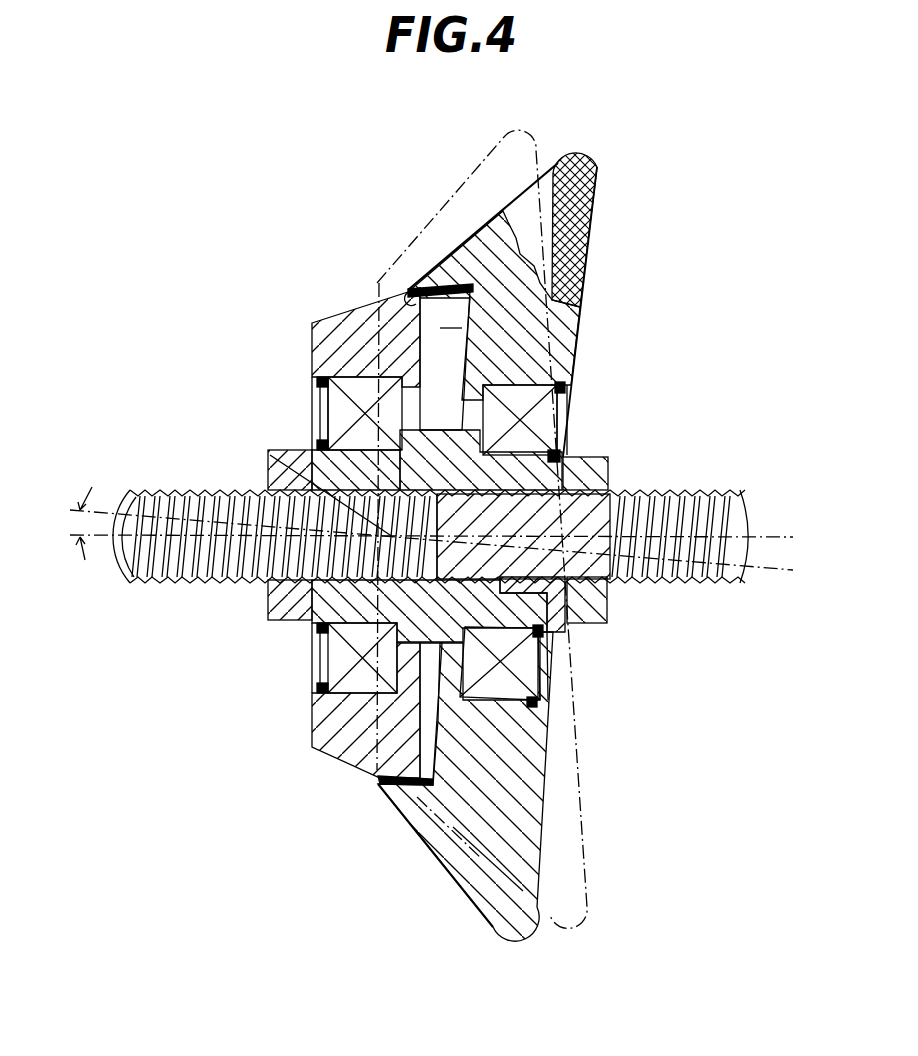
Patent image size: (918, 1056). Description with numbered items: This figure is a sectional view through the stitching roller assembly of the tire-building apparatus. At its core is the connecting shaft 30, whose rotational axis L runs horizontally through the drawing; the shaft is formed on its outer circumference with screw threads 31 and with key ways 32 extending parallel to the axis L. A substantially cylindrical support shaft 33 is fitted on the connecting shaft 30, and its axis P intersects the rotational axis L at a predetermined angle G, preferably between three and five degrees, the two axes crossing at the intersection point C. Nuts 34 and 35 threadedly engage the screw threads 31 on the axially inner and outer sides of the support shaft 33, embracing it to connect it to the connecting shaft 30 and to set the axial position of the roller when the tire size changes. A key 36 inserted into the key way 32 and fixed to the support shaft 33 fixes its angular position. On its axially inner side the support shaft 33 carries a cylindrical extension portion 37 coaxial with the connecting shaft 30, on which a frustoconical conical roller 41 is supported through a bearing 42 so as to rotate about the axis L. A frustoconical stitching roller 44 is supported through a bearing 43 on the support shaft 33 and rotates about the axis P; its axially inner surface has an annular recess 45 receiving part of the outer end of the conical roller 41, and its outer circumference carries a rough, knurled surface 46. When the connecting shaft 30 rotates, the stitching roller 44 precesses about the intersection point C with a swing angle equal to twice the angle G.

The connecting shaft 30 is at (690, 497).
The screw threads 31 is at (610, 467).
The key ways 32 is at (610, 600).
The support shaft 33 is at (528, 462).
The nut 34 is at (278, 448).
The nut 35 is at (600, 627).
The key 36 is at (573, 637).
The extension portion 37 is at (283, 622).
The conical roller 41 is at (340, 333).
The bearing 42 is at (338, 403).
The bearing 43 is at (540, 414).
The stitching roller 44 is at (457, 830).
The annular recess 45 is at (400, 290).
The rough surface 46 is at (588, 243).
The intersection point C is at (268, 473).
The predetermined angle G is at (74, 519).
The rotational axis L is at (757, 533).
The axis P is at (747, 570).